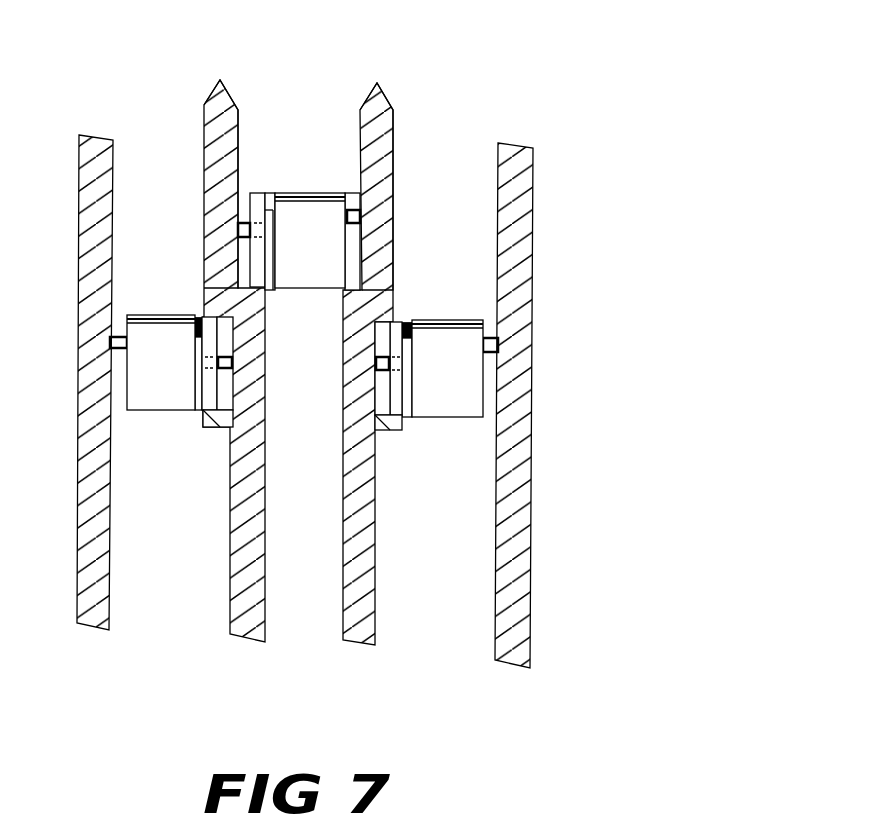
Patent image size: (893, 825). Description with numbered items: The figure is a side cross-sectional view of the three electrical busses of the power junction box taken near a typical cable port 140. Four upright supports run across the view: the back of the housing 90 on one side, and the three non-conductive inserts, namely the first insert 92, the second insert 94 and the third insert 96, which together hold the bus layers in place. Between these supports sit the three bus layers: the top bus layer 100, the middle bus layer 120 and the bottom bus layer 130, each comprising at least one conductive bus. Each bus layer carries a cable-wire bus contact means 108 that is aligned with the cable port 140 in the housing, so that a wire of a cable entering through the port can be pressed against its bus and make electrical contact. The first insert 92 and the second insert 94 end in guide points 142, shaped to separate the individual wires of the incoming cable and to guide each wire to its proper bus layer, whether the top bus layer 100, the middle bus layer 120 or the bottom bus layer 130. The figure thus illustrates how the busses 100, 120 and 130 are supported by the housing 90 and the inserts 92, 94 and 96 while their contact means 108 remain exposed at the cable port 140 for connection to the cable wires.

The housing 90 is at (530, 162).
The first insert 92 is at (373, 640).
The second insert 94 is at (240, 637).
The third insert 96 is at (80, 133).
The top bus layer 100 is at (467, 316).
The cable-wire bus contact means 108 is at (297, 270).
The middle bus layer 120 is at (325, 188).
The bottom bus layer 130 is at (185, 312).
The cable port 140 is at (152, 72).
The guide points 142 is at (225, 90).